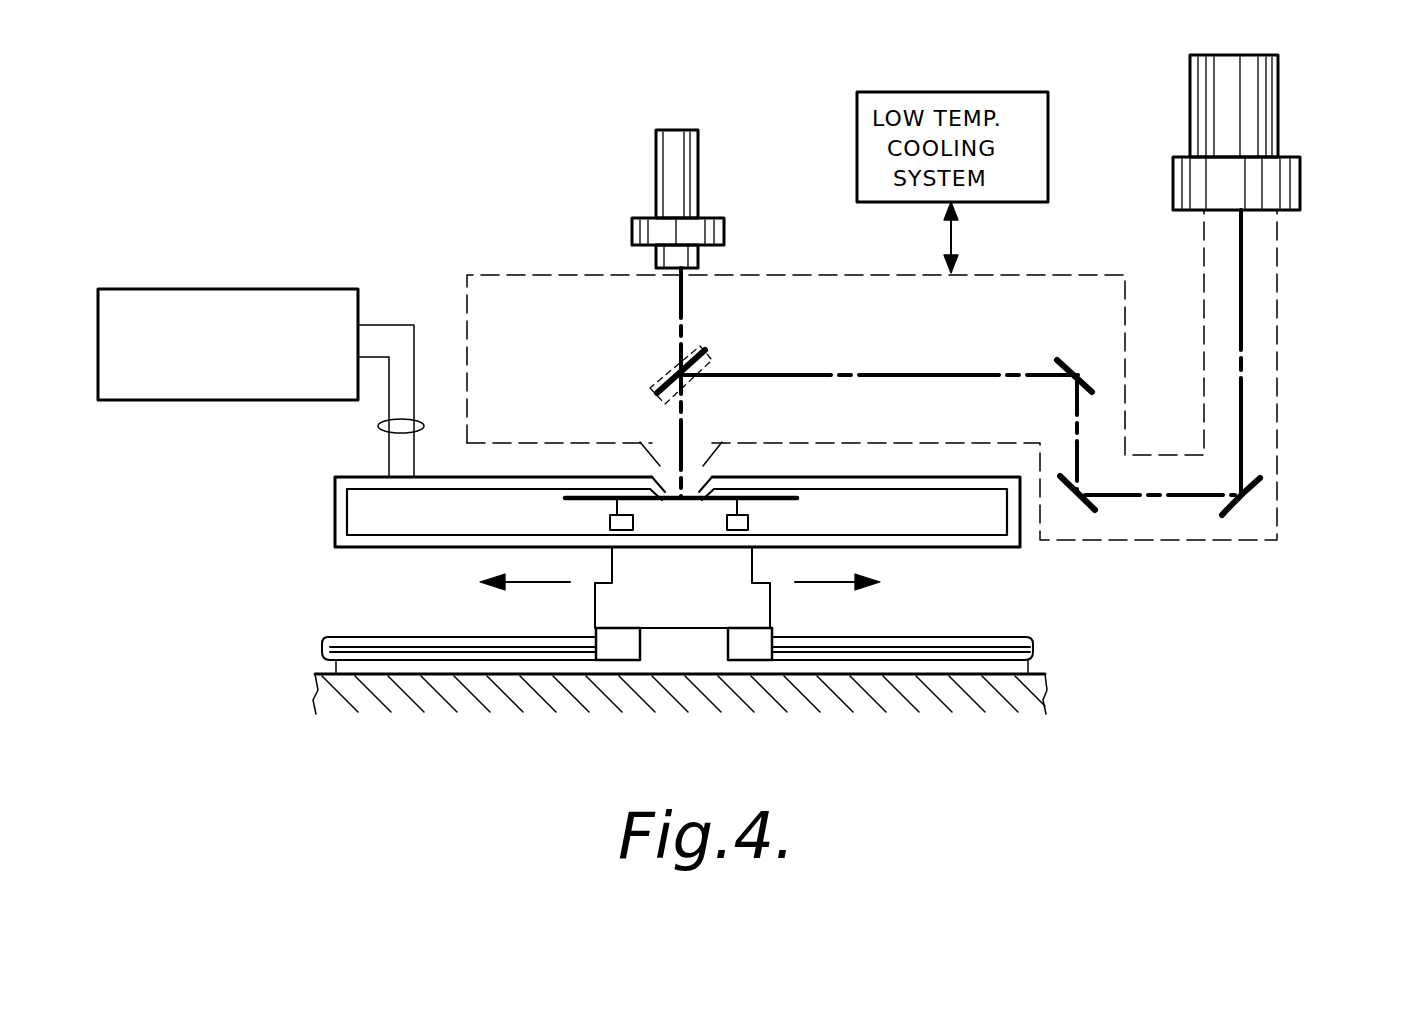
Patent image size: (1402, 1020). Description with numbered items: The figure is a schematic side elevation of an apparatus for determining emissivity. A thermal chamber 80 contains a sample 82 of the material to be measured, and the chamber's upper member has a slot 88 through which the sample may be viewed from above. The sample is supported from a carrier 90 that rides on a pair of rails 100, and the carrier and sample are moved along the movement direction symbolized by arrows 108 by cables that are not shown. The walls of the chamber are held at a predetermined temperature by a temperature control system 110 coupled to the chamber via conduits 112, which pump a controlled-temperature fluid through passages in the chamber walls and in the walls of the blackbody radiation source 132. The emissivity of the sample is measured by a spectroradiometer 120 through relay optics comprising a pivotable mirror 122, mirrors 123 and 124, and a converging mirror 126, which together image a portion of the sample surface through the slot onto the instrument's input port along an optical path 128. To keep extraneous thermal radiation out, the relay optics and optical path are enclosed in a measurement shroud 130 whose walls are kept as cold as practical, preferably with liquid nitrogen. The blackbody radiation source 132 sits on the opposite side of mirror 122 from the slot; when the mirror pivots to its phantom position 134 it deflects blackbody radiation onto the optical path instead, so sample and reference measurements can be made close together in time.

The thermal chamber 80 is at (335, 512).
The sample 82 is at (573, 508).
The slot 88 is at (662, 474).
The carrier 90 is at (772, 610).
The rails 100 is at (415, 645).
The arrows 108 is at (520, 582).
The temperature control system 110 is at (165, 289).
The conduits 112 is at (378, 426).
The spectroradiometer 120 is at (1279, 86).
The mirror 122 is at (705, 352).
The mirror 123 is at (1058, 360).
The mirror 124 is at (1085, 510).
The converging mirror 126 is at (1262, 484).
The optical path 128 is at (908, 373).
The measurement shroud 130 is at (522, 272).
The blackbody radiation source 132 is at (700, 143).
The phantom position 134 is at (655, 352).